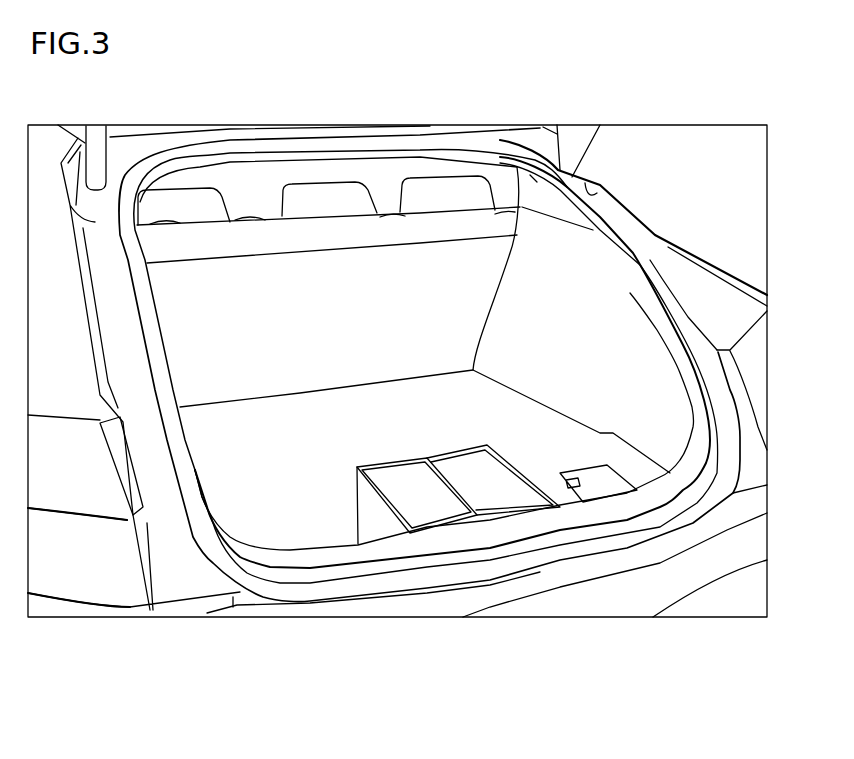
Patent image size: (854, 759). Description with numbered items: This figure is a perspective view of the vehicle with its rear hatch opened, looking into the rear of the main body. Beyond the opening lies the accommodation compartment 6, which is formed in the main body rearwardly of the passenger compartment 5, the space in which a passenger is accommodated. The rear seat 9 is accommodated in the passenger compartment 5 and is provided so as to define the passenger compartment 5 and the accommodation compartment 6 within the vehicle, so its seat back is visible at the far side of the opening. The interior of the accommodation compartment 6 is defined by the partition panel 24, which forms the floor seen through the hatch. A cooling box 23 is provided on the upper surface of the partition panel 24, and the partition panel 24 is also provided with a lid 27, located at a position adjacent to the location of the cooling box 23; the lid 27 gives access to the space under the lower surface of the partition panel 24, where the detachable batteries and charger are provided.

The passenger compartment 5 is at (397, 168).
The rear seat 9 is at (331, 195).
The accommodation compartment 6 is at (593, 258).
The partition panel 24 is at (293, 487).
The cooling box 23 is at (471, 517).
The lid 27 is at (604, 487).